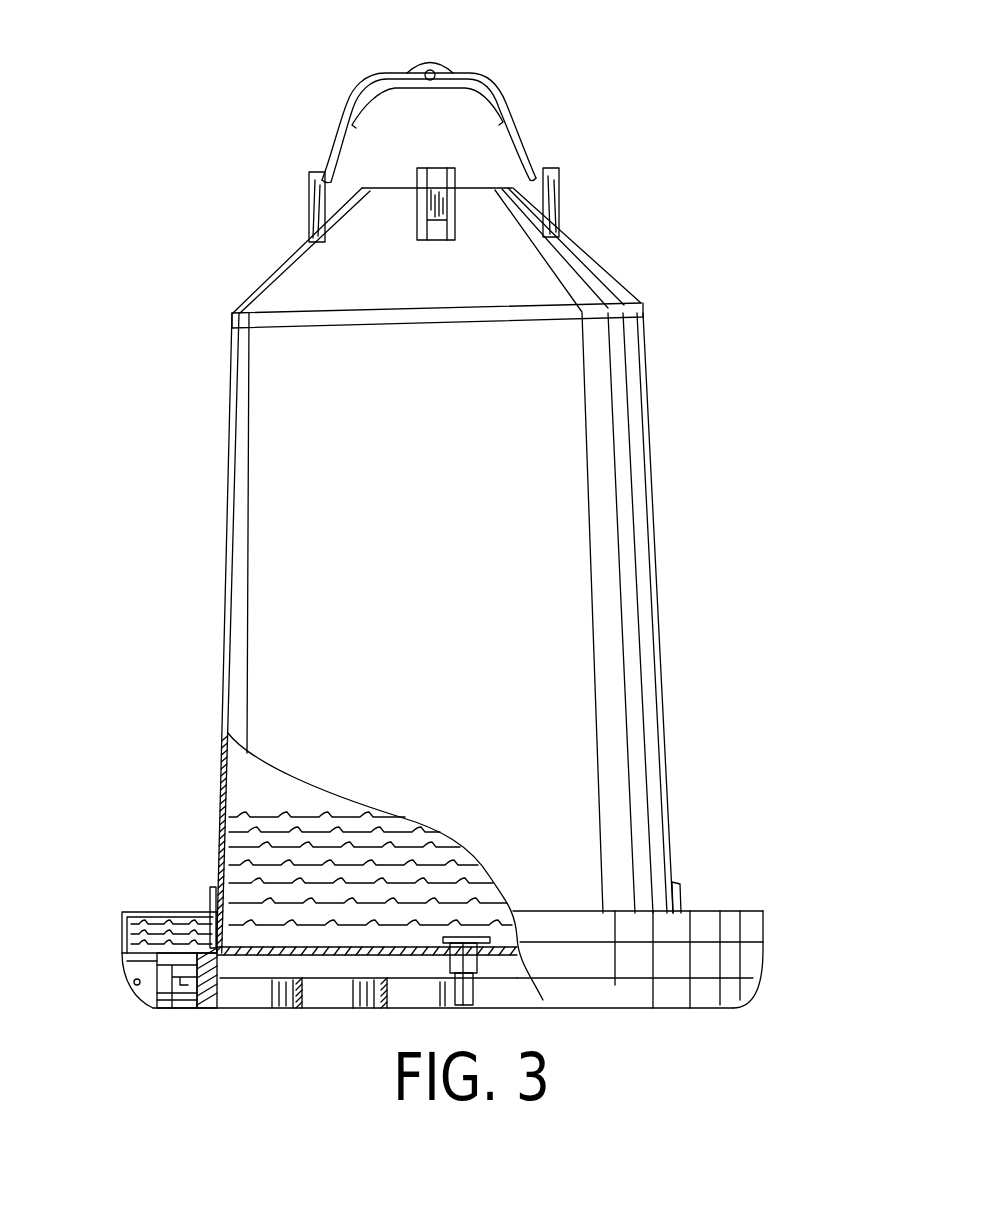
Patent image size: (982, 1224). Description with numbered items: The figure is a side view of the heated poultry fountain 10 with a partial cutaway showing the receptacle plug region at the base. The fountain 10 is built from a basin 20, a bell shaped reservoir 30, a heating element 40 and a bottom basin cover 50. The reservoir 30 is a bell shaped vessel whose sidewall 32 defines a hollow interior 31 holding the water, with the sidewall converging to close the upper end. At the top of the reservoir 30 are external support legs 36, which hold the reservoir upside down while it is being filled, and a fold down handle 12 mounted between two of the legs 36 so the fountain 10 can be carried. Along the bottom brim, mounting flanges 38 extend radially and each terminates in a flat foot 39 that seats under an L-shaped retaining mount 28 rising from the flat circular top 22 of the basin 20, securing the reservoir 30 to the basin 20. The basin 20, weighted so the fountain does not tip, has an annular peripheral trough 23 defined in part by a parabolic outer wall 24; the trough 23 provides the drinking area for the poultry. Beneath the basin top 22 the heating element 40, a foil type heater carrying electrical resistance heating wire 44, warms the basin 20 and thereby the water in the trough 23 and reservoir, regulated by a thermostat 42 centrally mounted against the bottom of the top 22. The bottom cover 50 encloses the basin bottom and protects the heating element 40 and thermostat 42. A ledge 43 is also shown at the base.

The heated poultry fountain 10 is at (425, 552).
The fold down handle 12 is at (502, 88).
The basin 20 is at (490, 957).
The flat circular top 22 is at (360, 950).
The annular peripheral trough 23 is at (157, 923).
The outer wall 24 is at (748, 935).
The L-shaped retaining mount 28 is at (212, 947).
The bell shaped reservoir 30 is at (448, 570).
The hollow interior 31 is at (278, 803).
The reservoir sidewall 32 is at (238, 495).
The external support leg 36 is at (313, 210).
The mounting flange 38 is at (682, 897).
The flat foot 39 is at (217, 962).
The heating element 40 is at (296, 964).
The thermostat 42 is at (467, 960).
The ledge 43 is at (137, 967).
The electrical resistance heating wire 44 is at (167, 978).
The bottom basin cover 50 is at (308, 1014).